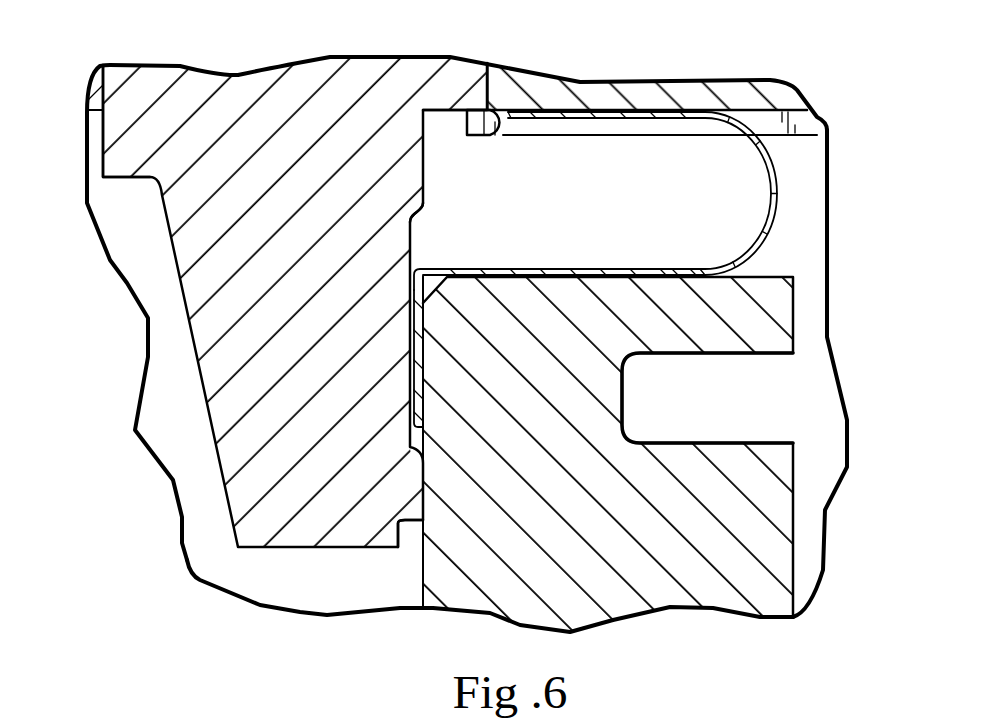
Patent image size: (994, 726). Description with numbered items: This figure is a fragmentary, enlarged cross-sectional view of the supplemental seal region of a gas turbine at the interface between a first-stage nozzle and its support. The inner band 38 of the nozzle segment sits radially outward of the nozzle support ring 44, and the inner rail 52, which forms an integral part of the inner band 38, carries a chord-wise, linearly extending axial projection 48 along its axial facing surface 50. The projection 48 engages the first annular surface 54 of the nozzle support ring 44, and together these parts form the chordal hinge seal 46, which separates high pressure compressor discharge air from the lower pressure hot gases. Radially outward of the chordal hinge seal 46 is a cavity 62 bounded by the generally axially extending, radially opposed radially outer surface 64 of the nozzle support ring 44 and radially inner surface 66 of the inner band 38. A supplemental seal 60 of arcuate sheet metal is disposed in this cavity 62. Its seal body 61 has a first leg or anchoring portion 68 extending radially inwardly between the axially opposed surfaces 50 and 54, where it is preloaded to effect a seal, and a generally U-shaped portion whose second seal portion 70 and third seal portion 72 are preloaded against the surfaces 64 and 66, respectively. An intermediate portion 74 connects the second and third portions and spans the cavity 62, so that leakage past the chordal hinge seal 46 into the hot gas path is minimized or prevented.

The inner band 38 is at (540, 87).
The nozzle support ring 44 is at (660, 597).
The chordal hinge seal 46 is at (287, 457).
The axial projection 48 is at (420, 488).
The axial facing surface 50 is at (413, 230).
The inner rail 52 is at (243, 245).
The first annular surface 54 is at (420, 573).
The supplemental seal 60 is at (812, 204).
The seal body 61 is at (433, 269).
The cavity 62 is at (555, 217).
The radially outer surface 64 is at (560, 269).
The radially inner surface 66 is at (502, 137).
The first leg or anchoring portion 68 is at (412, 367).
The second seal portion 70 is at (673, 269).
The third seal portion 72 is at (610, 118).
The intermediate portion 74 is at (773, 217).